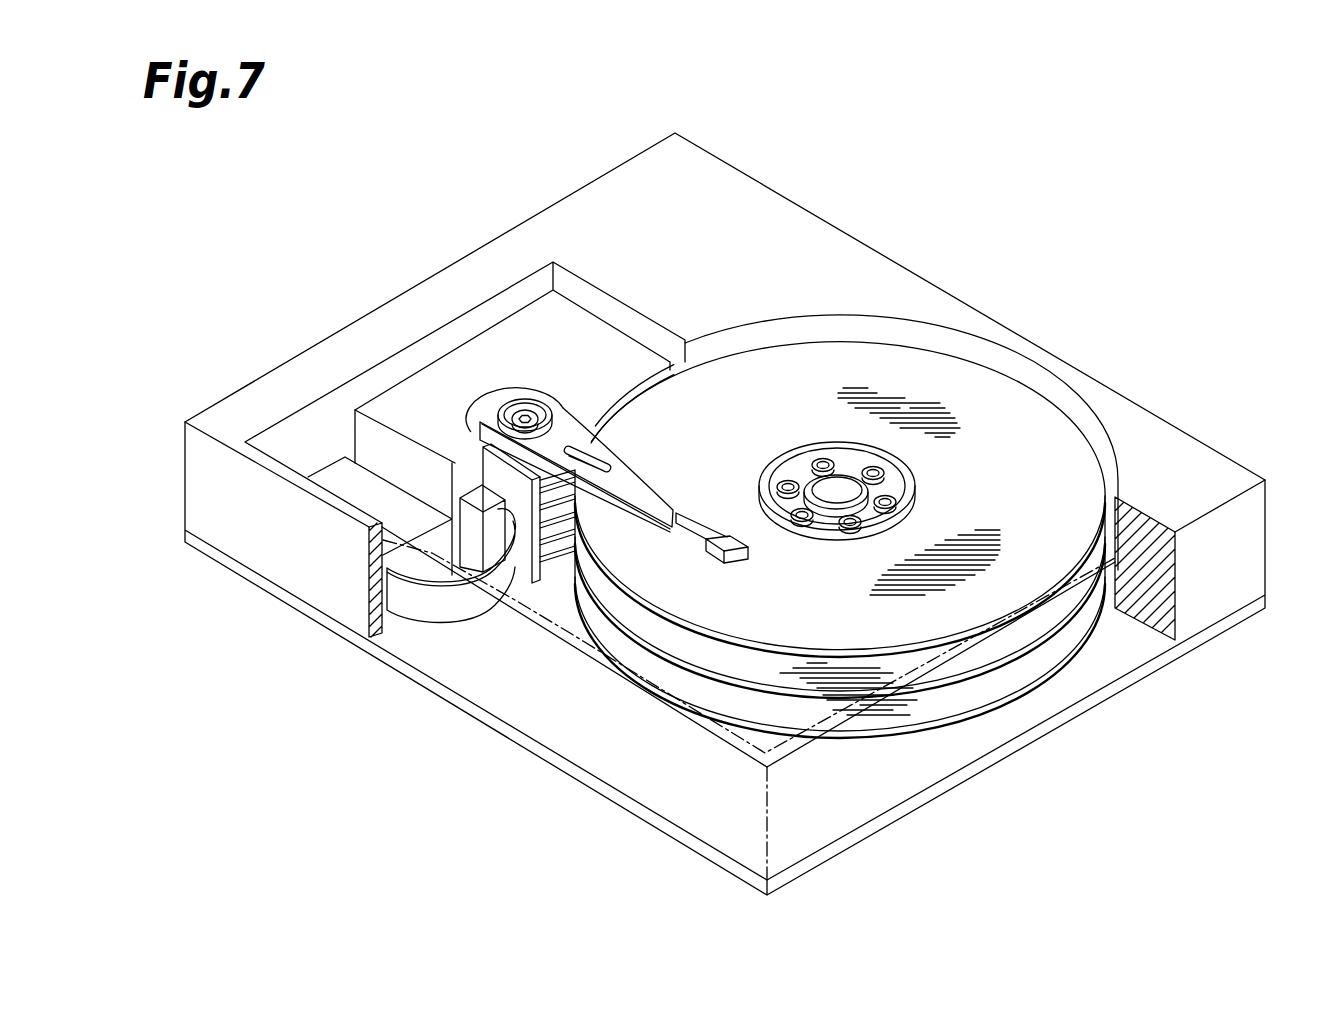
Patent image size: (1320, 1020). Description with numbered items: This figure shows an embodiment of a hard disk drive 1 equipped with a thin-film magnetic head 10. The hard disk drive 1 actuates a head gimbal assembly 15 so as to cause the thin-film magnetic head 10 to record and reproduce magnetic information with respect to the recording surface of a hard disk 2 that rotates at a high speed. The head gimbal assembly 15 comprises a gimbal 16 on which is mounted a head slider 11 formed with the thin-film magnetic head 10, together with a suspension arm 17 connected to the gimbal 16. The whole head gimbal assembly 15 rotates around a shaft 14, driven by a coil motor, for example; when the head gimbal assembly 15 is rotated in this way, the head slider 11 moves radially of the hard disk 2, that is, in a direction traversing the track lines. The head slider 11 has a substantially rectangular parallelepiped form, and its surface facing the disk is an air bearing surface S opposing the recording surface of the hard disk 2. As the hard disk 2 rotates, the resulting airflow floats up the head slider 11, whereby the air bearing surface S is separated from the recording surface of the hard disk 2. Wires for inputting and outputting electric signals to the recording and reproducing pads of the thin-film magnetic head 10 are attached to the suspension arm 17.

The hard disk drive 1 is at (968, 242).
The hard disk 2 is at (973, 402).
The thin-film magnetic head 10 is at (735, 544).
The head slider 11 is at (713, 558).
The shaft 14 is at (533, 402).
The head gimbal assembly 15 is at (672, 475).
The gimbal 16 is at (687, 523).
The suspension arm 17 is at (622, 488).
The air bearing surface S is at (746, 563).